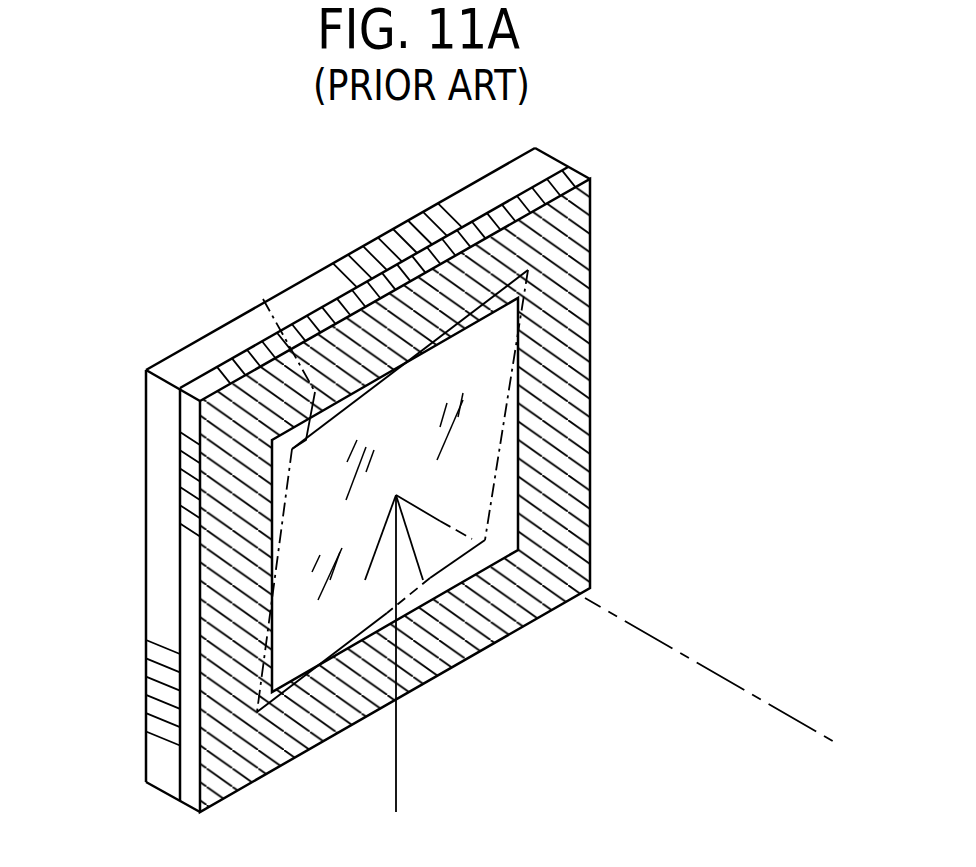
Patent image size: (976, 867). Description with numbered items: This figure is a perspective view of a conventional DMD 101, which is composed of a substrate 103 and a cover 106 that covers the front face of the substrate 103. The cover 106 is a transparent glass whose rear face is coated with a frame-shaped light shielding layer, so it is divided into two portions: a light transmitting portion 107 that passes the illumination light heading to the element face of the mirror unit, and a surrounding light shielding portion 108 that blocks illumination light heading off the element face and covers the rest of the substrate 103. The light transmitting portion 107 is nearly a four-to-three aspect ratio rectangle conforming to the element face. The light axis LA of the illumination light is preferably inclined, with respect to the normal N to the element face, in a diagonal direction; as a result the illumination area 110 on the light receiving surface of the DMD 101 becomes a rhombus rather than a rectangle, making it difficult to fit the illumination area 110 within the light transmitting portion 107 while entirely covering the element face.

The DMD 101 is at (430, 480).
The substrate 103 is at (162, 487).
The cover 106 is at (603, 367).
The light transmitting portion 107 is at (322, 515).
The light shielding portion 108 is at (562, 475).
The illumination area 110 is at (263, 299).
The light axis LA is at (396, 750).
The normal N is at (688, 658).